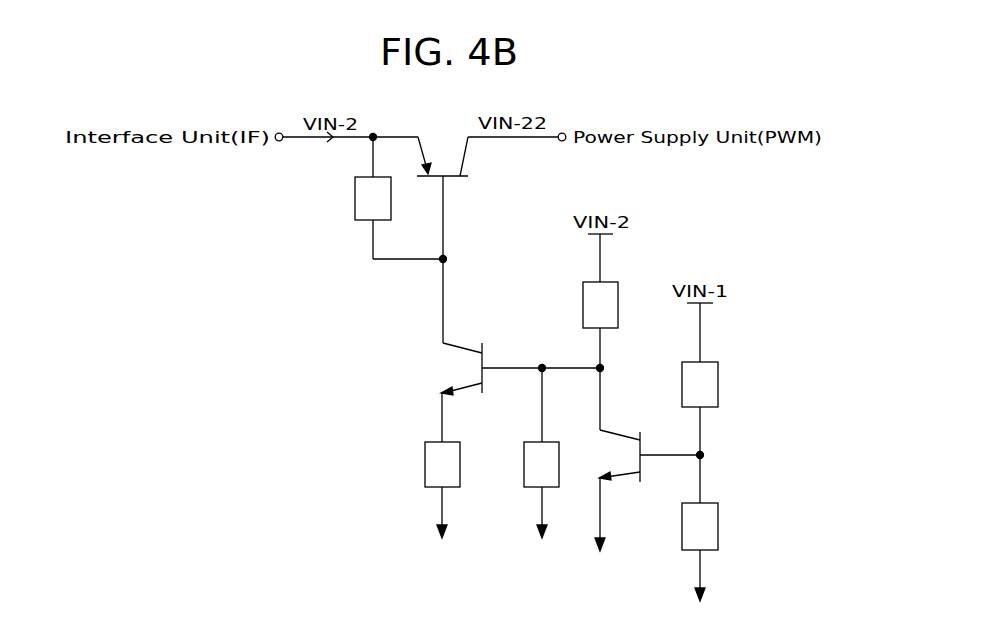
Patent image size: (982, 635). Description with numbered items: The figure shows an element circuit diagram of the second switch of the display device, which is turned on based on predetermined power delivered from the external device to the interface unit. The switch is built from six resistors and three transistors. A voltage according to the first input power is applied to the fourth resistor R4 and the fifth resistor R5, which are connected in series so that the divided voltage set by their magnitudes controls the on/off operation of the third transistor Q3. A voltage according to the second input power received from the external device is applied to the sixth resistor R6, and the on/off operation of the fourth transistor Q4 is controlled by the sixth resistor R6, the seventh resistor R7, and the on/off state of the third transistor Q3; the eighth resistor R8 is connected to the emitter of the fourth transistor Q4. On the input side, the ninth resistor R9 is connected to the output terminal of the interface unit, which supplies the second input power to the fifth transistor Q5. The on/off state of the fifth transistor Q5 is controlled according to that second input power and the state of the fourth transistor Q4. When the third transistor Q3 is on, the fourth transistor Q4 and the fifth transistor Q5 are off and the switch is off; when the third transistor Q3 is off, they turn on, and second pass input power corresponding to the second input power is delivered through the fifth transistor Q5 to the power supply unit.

The ninth resistor R9 is at (373, 198).
The fifth transistor Q5 is at (465, 240).
The fourth transistor Q4 is at (520, 369).
The eighth resistor R8 is at (442, 465).
The seventh resistor R7 is at (541, 453).
The sixth resistor R6 is at (600, 301).
The third transistor Q3 is at (647, 459).
The fourth resistor R4 is at (700, 379).
The fifth resistor R5 is at (700, 528).